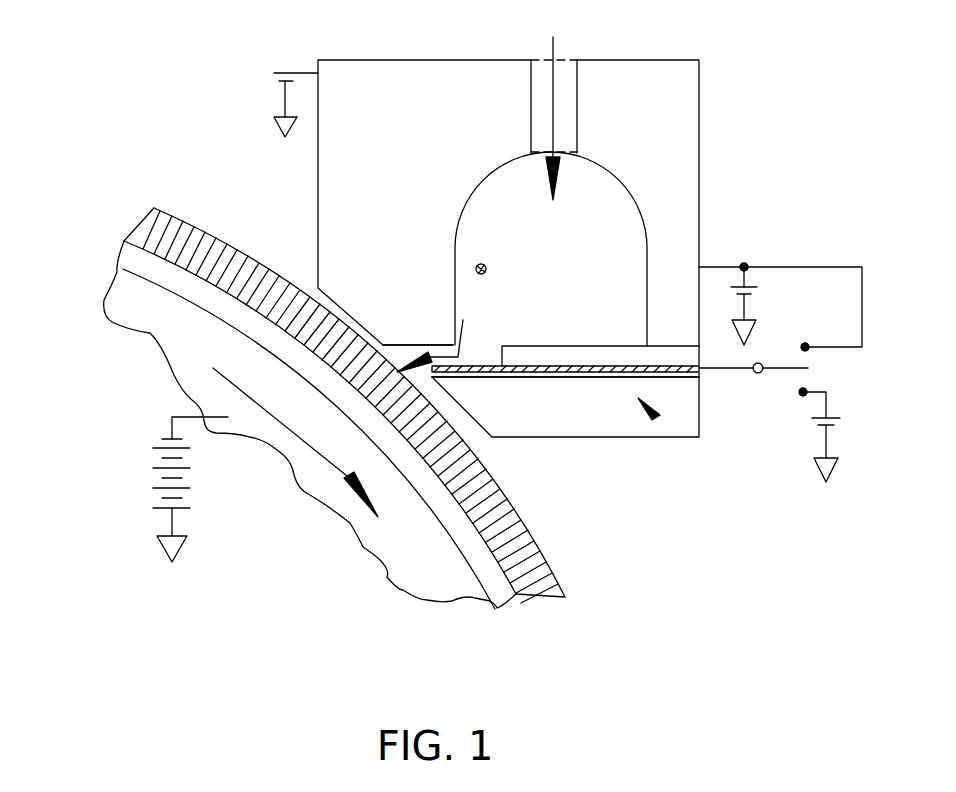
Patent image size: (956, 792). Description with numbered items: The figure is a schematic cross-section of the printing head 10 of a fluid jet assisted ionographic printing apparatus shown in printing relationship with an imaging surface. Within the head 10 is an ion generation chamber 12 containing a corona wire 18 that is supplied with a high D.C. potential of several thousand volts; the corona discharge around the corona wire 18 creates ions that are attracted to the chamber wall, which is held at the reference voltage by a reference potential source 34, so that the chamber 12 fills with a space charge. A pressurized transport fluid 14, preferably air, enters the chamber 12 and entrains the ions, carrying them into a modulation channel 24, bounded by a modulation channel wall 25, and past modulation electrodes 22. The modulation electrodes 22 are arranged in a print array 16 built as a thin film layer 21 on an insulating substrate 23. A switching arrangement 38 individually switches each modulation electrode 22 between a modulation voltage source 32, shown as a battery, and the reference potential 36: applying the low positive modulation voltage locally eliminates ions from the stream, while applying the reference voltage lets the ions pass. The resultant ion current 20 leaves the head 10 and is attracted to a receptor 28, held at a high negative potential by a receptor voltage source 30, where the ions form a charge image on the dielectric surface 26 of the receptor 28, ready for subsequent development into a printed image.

The printing head 10 is at (699, 96).
The ion generation chamber 12 is at (487, 171).
The transport fluid 14 is at (554, 60).
The print array 16 is at (655, 418).
The corona wire 18 is at (487, 269).
The ion current 20 is at (465, 330).
The thin film layer 21 is at (597, 378).
The modulation electrodes 22 is at (468, 364).
The insulating substrate 23 is at (568, 373).
The modulation channel 24 is at (398, 357).
The modulation channel wall 25 is at (433, 344).
The dielectric surface 26 is at (200, 231).
The receptor 28 is at (150, 383).
The receptor voltage source 30 is at (165, 510).
The modulation voltage source 32 is at (822, 427).
The reference potential source 34 is at (292, 72).
The reference potential 36 is at (848, 348).
The switching arrangement 38 is at (758, 374).